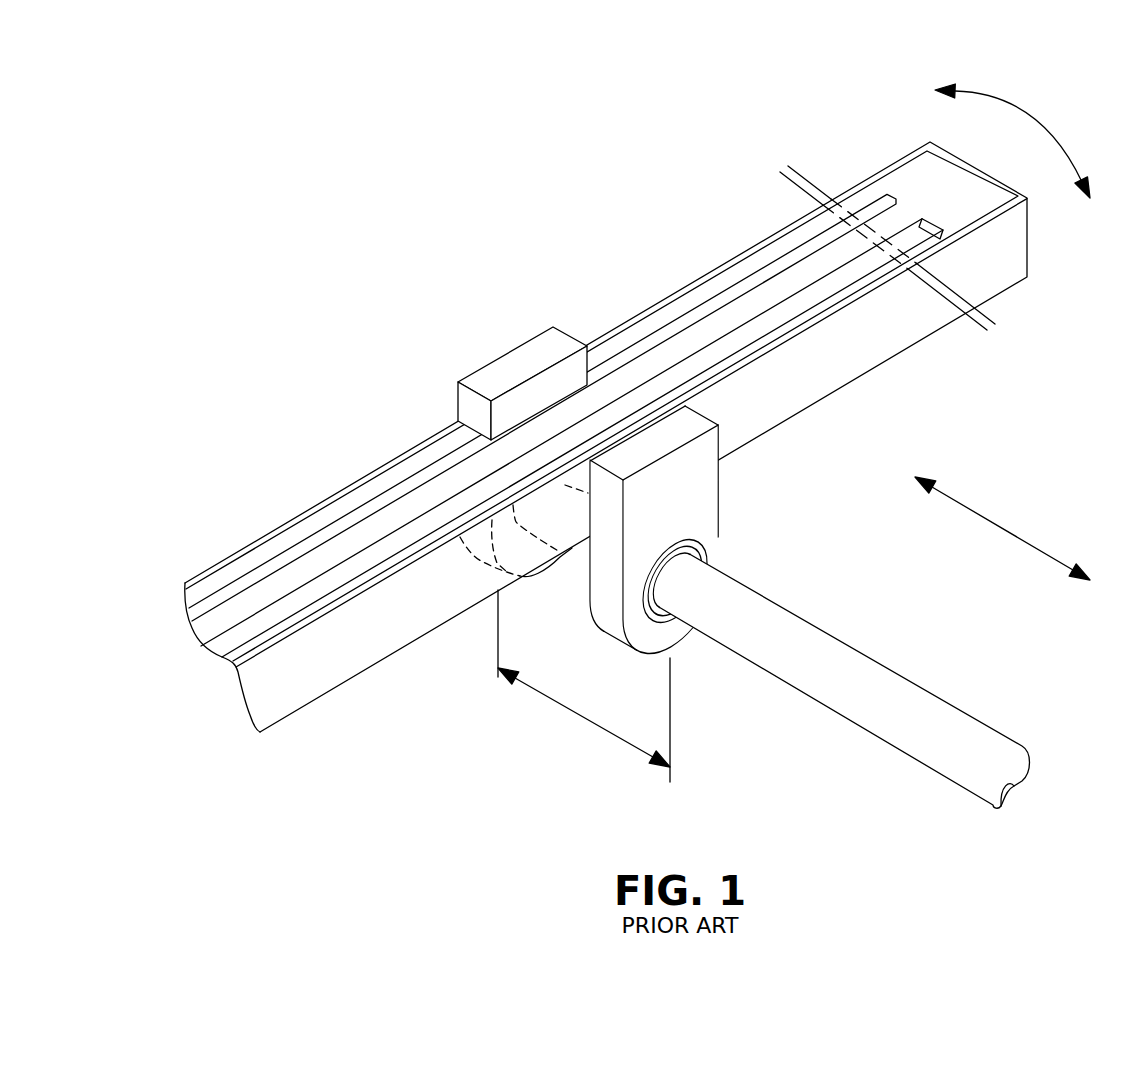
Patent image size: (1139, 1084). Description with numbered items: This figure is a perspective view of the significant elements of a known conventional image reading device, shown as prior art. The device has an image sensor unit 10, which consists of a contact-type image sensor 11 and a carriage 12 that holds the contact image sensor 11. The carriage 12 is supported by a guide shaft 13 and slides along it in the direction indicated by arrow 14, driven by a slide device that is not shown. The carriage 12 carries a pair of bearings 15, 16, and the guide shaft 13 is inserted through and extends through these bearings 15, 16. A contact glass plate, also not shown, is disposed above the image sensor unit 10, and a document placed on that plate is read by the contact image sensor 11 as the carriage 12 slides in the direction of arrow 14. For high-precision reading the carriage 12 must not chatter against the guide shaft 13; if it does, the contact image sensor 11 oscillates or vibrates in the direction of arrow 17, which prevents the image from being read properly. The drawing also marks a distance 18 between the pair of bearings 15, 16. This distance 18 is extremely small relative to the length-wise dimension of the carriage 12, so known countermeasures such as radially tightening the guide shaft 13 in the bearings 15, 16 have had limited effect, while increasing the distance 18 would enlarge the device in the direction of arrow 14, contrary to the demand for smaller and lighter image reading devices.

The image sensor unit 10 is at (298, 485).
The contact-type image sensor 11 is at (713, 284).
The carriage 12 is at (852, 366).
The guide shaft 13 is at (817, 653).
The arrow 14 is at (987, 517).
The bearing 15 is at (712, 513).
The bearing 16 is at (488, 357).
The arrow 17 is at (1027, 112).
The distance 18 is at (567, 707).